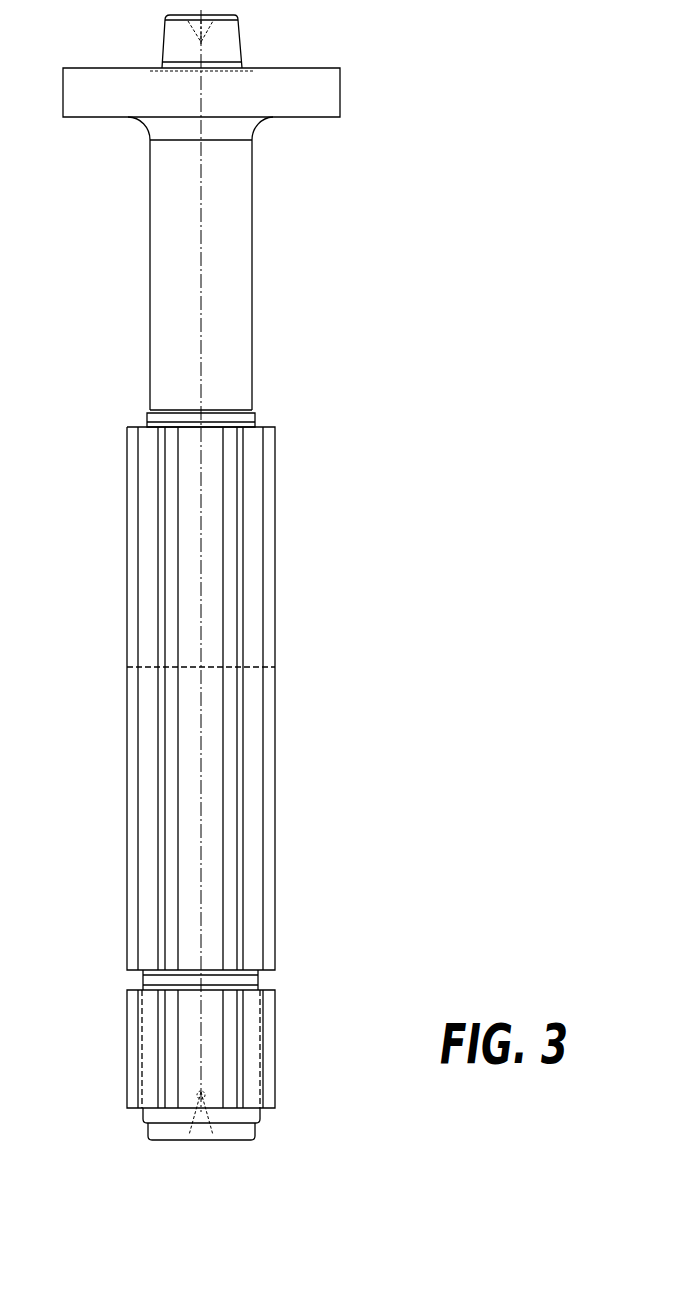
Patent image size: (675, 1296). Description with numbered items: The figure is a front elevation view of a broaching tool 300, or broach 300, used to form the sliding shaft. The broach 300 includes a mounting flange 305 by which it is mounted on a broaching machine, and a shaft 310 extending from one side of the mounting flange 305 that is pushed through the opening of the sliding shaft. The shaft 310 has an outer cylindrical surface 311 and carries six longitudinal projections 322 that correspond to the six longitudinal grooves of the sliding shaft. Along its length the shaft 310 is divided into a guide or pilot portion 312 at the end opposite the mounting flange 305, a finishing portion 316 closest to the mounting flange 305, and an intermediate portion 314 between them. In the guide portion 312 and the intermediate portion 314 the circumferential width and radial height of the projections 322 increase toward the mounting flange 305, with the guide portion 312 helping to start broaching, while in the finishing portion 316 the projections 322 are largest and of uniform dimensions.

The broaching tool 300 is at (420, 130).
The mounting flange 305 is at (306, 75).
The shaft 310 is at (230, 385).
The outer cylindrical surface 311 is at (170, 382).
The guide portion 312 is at (292, 1106).
The intermediate portion 314 is at (292, 968).
The finishing portion 316 is at (292, 668).
The longitudinal projections 322 is at (233, 440).